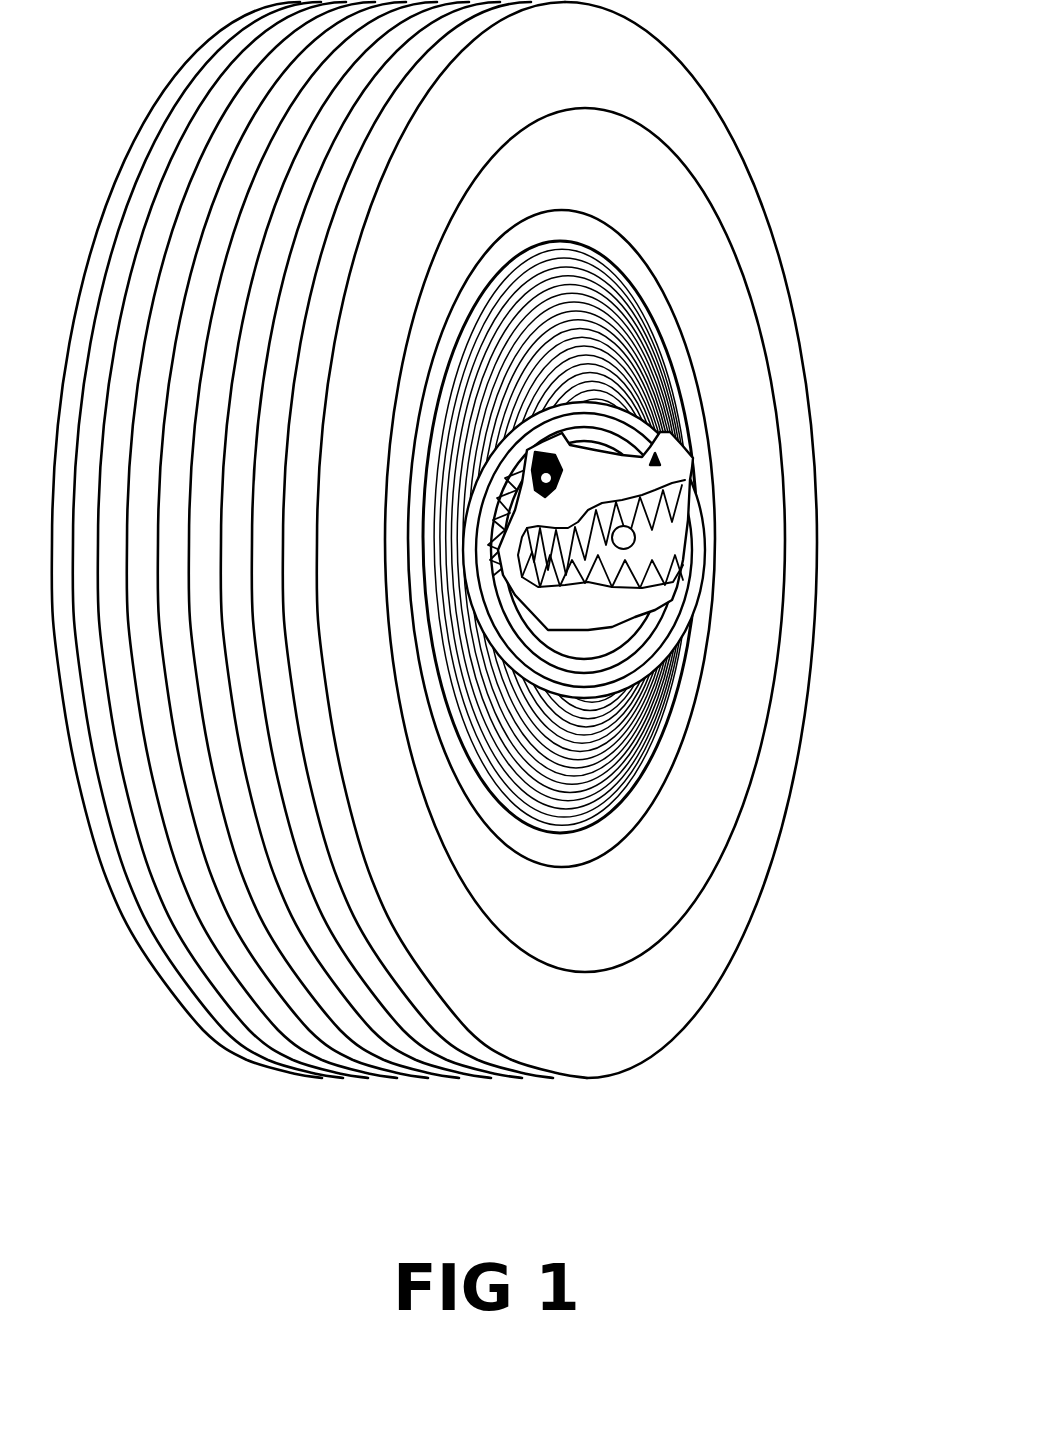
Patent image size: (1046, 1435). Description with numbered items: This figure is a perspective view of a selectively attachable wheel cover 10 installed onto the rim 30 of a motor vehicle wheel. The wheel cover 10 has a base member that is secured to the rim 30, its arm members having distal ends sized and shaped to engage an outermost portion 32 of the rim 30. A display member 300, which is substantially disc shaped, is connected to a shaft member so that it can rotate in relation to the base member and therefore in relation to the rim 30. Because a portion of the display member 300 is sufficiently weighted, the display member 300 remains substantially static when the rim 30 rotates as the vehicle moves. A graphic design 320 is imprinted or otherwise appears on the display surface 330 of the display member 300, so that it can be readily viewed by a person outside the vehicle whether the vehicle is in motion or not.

The wheel cover 10 is at (655, 558).
The rim 30 is at (632, 267).
The outermost portion of the rim 32 is at (598, 217).
The display member 300 is at (692, 420).
The graphic design 320 is at (677, 467).
The display surface 330 is at (637, 762).